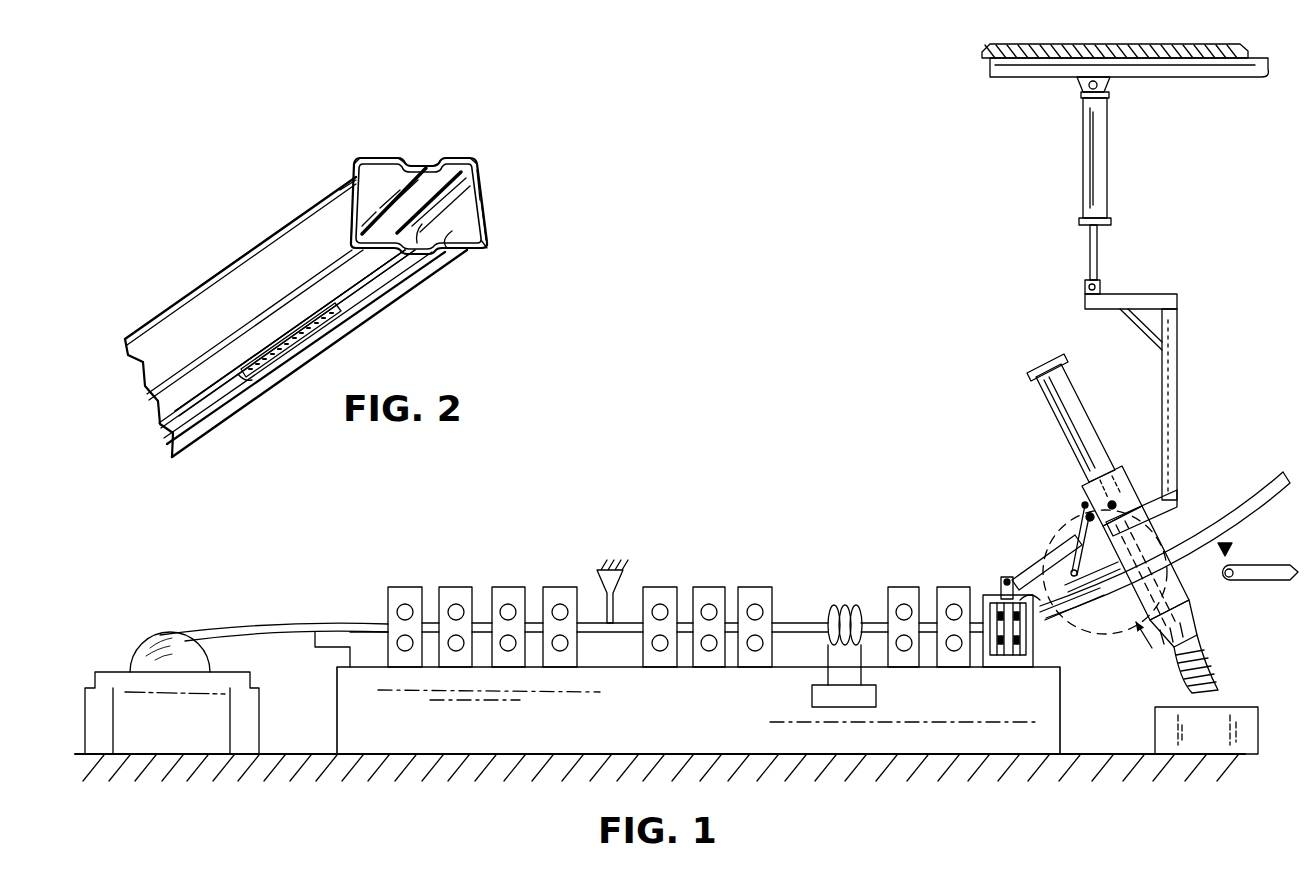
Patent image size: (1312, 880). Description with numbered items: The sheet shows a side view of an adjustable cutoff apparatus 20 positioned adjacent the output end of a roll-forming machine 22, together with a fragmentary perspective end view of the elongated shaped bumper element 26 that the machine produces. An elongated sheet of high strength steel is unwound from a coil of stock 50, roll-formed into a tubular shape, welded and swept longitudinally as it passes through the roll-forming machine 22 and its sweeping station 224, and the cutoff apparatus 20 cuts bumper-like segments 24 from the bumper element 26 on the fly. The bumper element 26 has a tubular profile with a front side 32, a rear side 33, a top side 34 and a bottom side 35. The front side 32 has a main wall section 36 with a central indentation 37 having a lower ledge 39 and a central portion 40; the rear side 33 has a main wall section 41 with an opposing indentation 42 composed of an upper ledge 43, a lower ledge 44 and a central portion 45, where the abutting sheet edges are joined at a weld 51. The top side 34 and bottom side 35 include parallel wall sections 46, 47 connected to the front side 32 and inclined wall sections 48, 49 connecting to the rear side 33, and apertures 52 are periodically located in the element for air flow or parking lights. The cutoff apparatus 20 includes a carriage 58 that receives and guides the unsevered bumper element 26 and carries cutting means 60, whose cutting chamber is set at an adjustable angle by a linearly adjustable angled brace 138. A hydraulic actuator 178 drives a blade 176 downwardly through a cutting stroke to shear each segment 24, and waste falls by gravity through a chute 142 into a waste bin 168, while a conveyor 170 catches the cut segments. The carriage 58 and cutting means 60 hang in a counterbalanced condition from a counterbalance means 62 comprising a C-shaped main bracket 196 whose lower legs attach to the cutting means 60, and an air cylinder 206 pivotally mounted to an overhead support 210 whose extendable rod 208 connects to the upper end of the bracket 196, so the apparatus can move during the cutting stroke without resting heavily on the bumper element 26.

In FIG. 1, the cutoff apparatus 20 is at (950, 426).
In FIG. 1, the roll-forming machine 22 is at (563, 587).
In FIG. 1, the bumper-like segment 24 is at (1250, 512).
In FIG. 2, the bumper element 26 is at (541, 124).
In FIG. 1, the bumper element 26 is at (1042, 612).
In FIG. 2, the front side 32 is at (405, 300).
In FIG. 2, the rear side 33 is at (394, 152).
In FIG. 2, the top side 34 is at (290, 240).
In FIG. 2, the bottom side 35 is at (492, 210).
In FIG. 2, the main wall section 36 is at (335, 268).
In FIG. 2, the indentation 37 is at (434, 221).
In FIG. 2, the lower ledge 39 is at (458, 230).
In FIG. 2, the central portion 40 is at (387, 268).
In FIG. 2, the main wall section 41 is at (370, 157).
In FIG. 2, the indentation 42 is at (425, 160).
In FIG. 2, the upper ledge 43 is at (400, 155).
In FIG. 2, the lower ledge 44 is at (358, 186).
In FIG. 2, the central portion 45 is at (411, 172).
In FIG. 2, the parallel wall section 46 is at (352, 232).
In FIG. 2, the parallel wall section 47 is at (484, 230).
In FIG. 2, the inclined wall section 48 is at (355, 186).
In FIG. 2, the inclined wall section 49 is at (481, 180).
In FIG. 2, the weld 51 is at (421, 160).
In FIG. 2, the apertures 52 is at (287, 335).
In FIG. 2, the carriage 58 is at (360, 226).
In FIG. 1, the carriage 58 is at (1120, 628).
In FIG. 1, the cutting means 60 is at (1070, 482).
In FIG. 1, the counterbalance means 62 is at (1124, 193).
In FIG. 1, the angled brace 138 is at (1045, 547).
In FIG. 1, the chute 142 is at (1196, 652).
In FIG. 1, the waste bin 168 is at (1232, 707).
In FIG. 1, the conveyor 170 is at (1243, 568).
In FIG. 1, the blade 176 is at (1150, 578).
In FIG. 1, the hydraulic actuator 178 is at (1075, 378).
In FIG. 1, the C-shaped main bracket 196 is at (1180, 296).
In FIG. 1, the air cylinder 206 is at (1110, 143).
In FIG. 1, the extendable rod 208 is at (1090, 255).
In FIG. 1, the overhead support 210 is at (1000, 46).
In FIG. 1, the sweeping station 224 is at (995, 595).
In FIG. 1, the coil of stock 50 is at (164, 634).